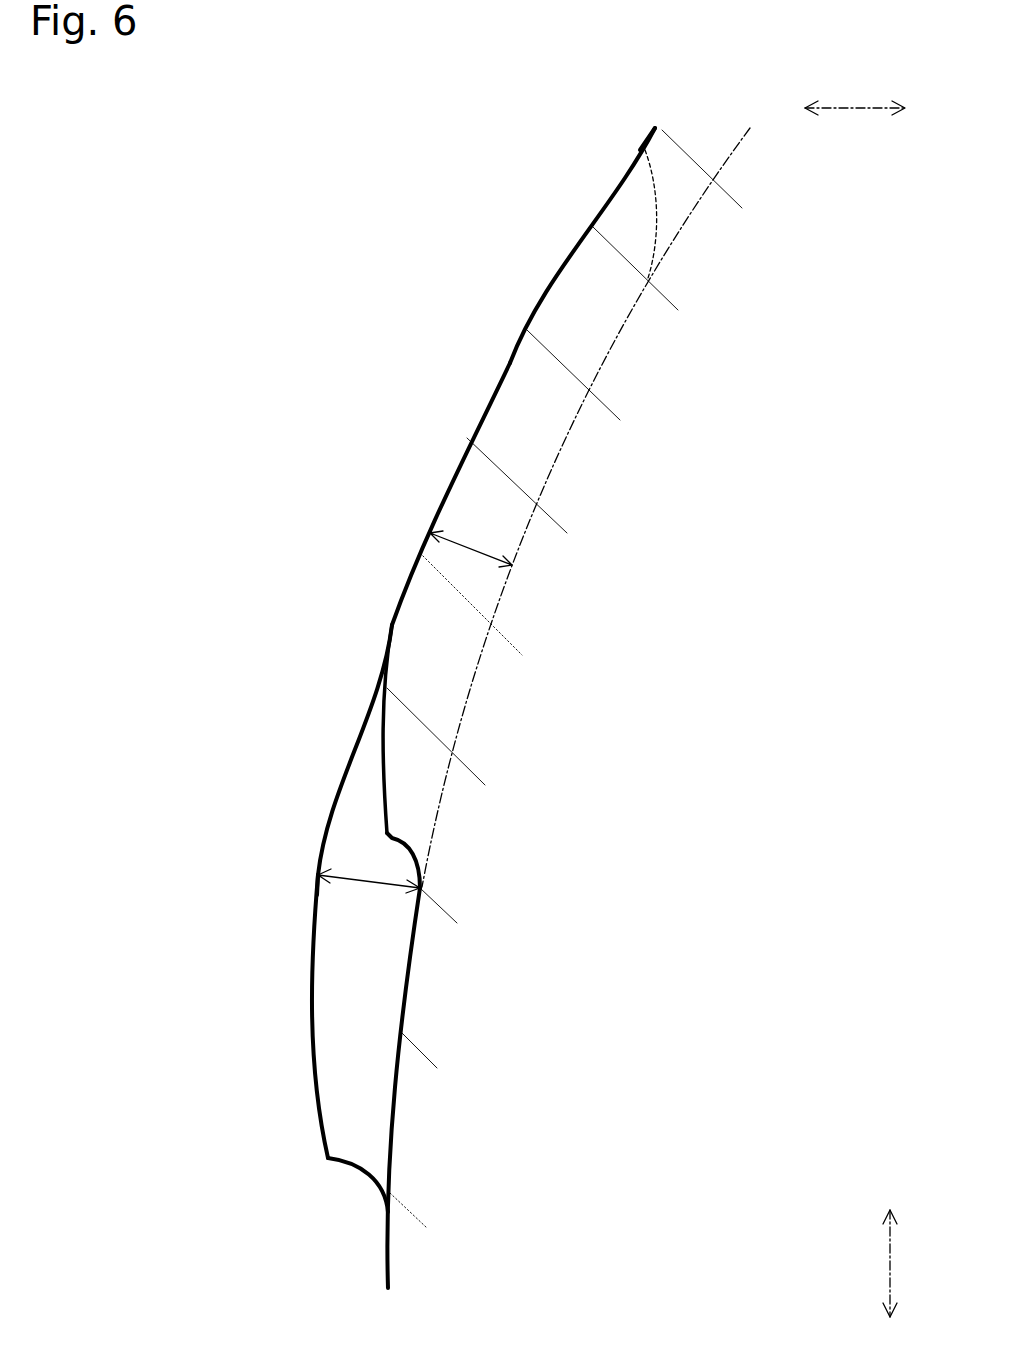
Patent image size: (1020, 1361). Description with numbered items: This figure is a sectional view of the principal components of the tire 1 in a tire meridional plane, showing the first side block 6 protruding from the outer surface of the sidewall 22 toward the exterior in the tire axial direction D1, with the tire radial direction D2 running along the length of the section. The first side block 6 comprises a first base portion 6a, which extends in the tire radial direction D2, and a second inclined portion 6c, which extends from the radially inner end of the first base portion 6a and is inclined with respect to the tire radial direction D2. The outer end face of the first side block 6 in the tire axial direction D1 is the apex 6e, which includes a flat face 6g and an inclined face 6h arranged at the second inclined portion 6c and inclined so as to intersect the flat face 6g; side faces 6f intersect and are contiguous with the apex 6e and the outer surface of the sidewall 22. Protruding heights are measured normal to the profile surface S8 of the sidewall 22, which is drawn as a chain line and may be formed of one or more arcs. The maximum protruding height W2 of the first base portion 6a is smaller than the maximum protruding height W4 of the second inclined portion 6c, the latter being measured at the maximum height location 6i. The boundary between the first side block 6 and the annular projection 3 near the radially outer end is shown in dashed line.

The tire 1 is at (149, 128).
The annular projection 3 is at (655, 128).
The sidewall 22 is at (352, 431).
The first side block 6 is at (392, 531).
The first base portion 6a is at (518, 358).
The second inclined portion 6c is at (327, 975).
The apex 6e is at (452, 468).
The side face 6f is at (402, 852).
The flat face 6g is at (367, 693).
The inclined face 6h is at (382, 733).
The maximum height location 6i is at (317, 872).
The profile surface S8 is at (565, 437).
The maximum protruding height of first base portion W2 is at (471, 545).
The maximum protruding height of second inclined portion W4 is at (369, 889).
The tire axial direction D1 is at (855, 99).
The tire radial direction D2 is at (875, 1263).